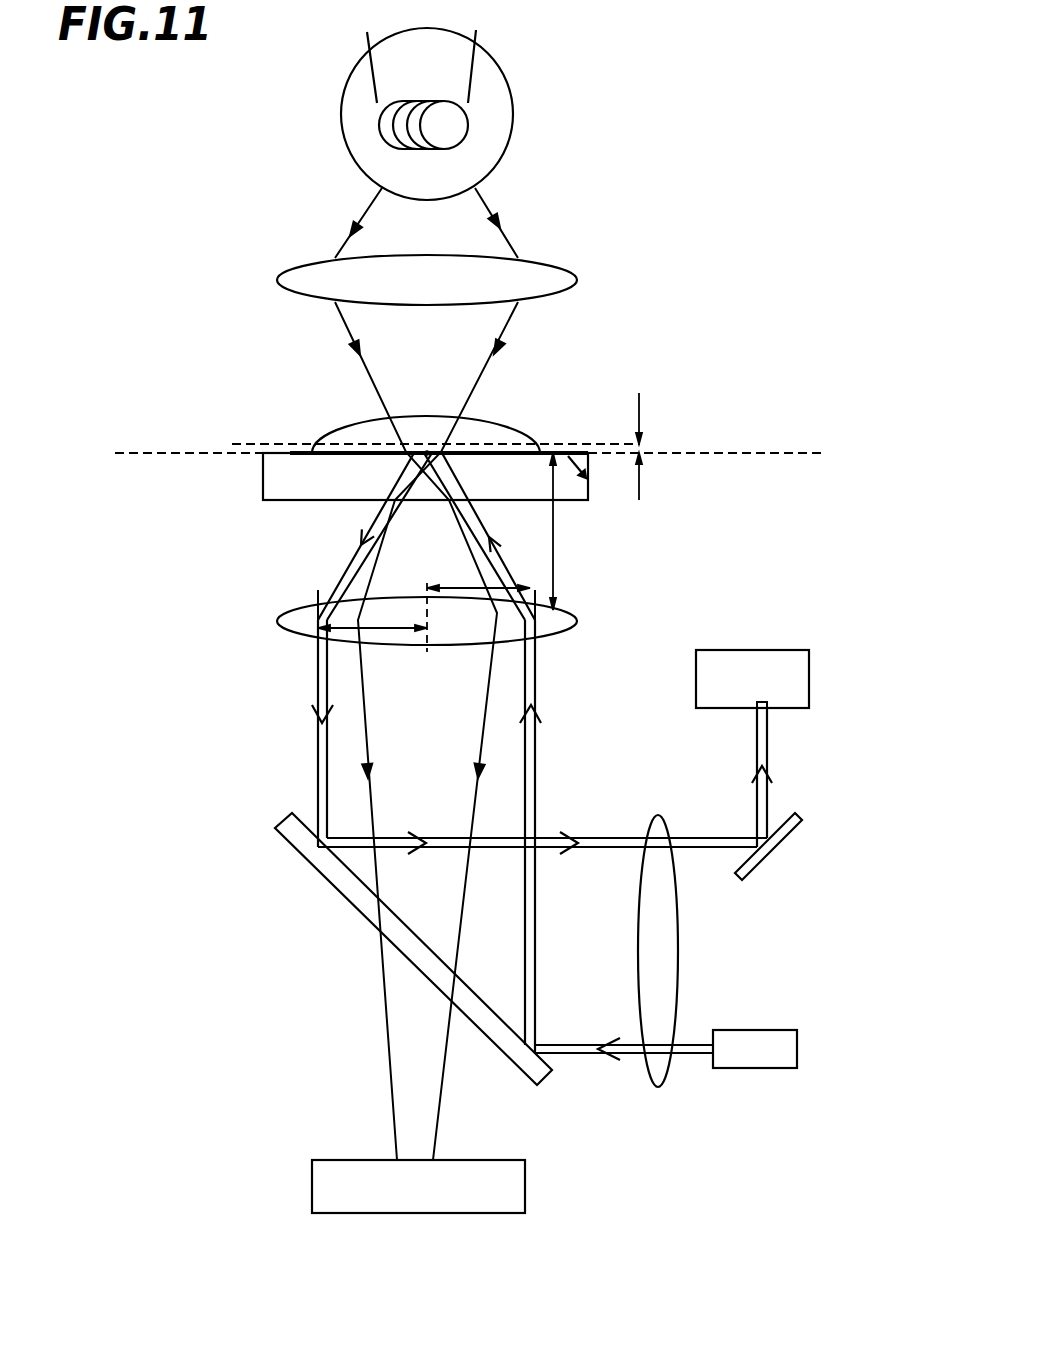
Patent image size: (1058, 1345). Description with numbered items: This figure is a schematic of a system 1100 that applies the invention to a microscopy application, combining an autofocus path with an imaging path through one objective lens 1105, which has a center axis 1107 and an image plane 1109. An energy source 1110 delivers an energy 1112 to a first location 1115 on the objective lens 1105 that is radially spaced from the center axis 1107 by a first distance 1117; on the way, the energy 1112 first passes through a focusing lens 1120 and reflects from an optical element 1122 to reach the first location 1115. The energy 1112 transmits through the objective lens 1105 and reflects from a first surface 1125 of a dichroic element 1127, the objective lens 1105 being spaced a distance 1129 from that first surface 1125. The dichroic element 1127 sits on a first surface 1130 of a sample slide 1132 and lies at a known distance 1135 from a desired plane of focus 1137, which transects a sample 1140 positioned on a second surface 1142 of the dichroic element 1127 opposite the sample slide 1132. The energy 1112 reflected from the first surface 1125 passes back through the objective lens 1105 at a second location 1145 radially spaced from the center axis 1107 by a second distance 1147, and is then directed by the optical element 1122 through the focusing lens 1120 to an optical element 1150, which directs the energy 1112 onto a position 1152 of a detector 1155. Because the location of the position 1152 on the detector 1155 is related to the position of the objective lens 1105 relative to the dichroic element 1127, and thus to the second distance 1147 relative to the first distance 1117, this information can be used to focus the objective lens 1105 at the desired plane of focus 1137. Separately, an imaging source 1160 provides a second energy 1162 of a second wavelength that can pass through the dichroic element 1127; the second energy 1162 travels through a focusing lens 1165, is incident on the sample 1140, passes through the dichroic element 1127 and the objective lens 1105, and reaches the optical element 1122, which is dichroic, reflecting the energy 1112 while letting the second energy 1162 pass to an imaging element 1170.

The system 1100 is at (165, 284).
The objective lens 1105 is at (568, 621).
The center axis 1107 is at (427, 652).
The image plane 1109 is at (133, 453).
The energy source 1110 is at (790, 1057).
The energy 1112 is at (318, 758).
The first location 1115 is at (527, 587).
The first distance 1117 is at (448, 587).
The focusing lens 1120 is at (658, 818).
The optical element 1122 is at (300, 845).
The first surface 1125 is at (572, 456).
The dichroic element 1127 is at (588, 455).
The distance 1129 is at (556, 560).
The first surface of sample slide 1130 is at (280, 453).
The sample slide 1132 is at (272, 487).
The known distance 1135 is at (640, 449).
The desired plane of focus 1137 is at (598, 444).
The sample 1140 is at (474, 430).
The second surface 1142 is at (558, 451).
The second location 1145 is at (320, 587).
The second distance 1147 is at (380, 642).
The optical element 1150 is at (790, 830).
The position 1152 is at (768, 705).
The detector 1155 is at (797, 685).
The imaging source 1160 is at (495, 130).
The second energy 1162 is at (480, 235).
The focusing lens 1165 is at (575, 275).
The imaging element 1170 is at (325, 1187).